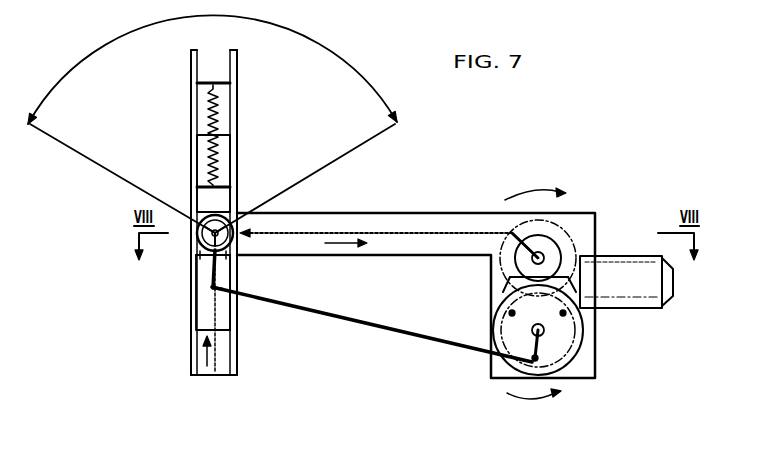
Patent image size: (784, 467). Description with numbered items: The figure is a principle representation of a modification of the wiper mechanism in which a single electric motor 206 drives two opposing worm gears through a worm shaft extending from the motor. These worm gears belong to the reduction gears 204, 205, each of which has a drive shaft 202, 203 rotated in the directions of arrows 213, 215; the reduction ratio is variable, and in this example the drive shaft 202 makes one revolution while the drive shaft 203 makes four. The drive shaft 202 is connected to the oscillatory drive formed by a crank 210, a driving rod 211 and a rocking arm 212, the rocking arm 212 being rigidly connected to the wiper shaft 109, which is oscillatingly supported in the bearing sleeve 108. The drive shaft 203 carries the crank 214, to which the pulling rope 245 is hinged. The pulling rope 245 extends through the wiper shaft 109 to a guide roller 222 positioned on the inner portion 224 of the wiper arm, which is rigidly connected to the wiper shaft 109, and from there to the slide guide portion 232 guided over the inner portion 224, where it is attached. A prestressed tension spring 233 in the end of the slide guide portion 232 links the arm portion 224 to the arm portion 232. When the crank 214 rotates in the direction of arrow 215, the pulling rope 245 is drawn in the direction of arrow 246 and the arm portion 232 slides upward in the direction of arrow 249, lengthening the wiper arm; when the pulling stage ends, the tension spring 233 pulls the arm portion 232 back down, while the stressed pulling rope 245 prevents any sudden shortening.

The bearing sleeve 108 is at (233, 222).
The wiper shaft 109 is at (198, 246).
The drive shaft 202 is at (543, 335).
The drive shaft 203 is at (556, 250).
The reduction gear 204 is at (573, 347).
The reduction gear 205 is at (568, 256).
The electric motor 206 is at (603, 270).
The crank 210 is at (532, 328).
The driving rod 211 is at (380, 325).
The rocking arm 212 is at (207, 270).
The arrow 213 is at (508, 400).
The crank 214 is at (535, 252).
The arrow 215 is at (535, 192).
The guide roller 222 is at (213, 263).
The inner portion of the wiper arm 224 is at (205, 312).
The slide guide portion 232 is at (228, 108).
The tension spring 233 is at (213, 114).
The pulling rope 245 is at (373, 233).
The arrow 246 is at (343, 245).
The arrow 249 is at (205, 350).